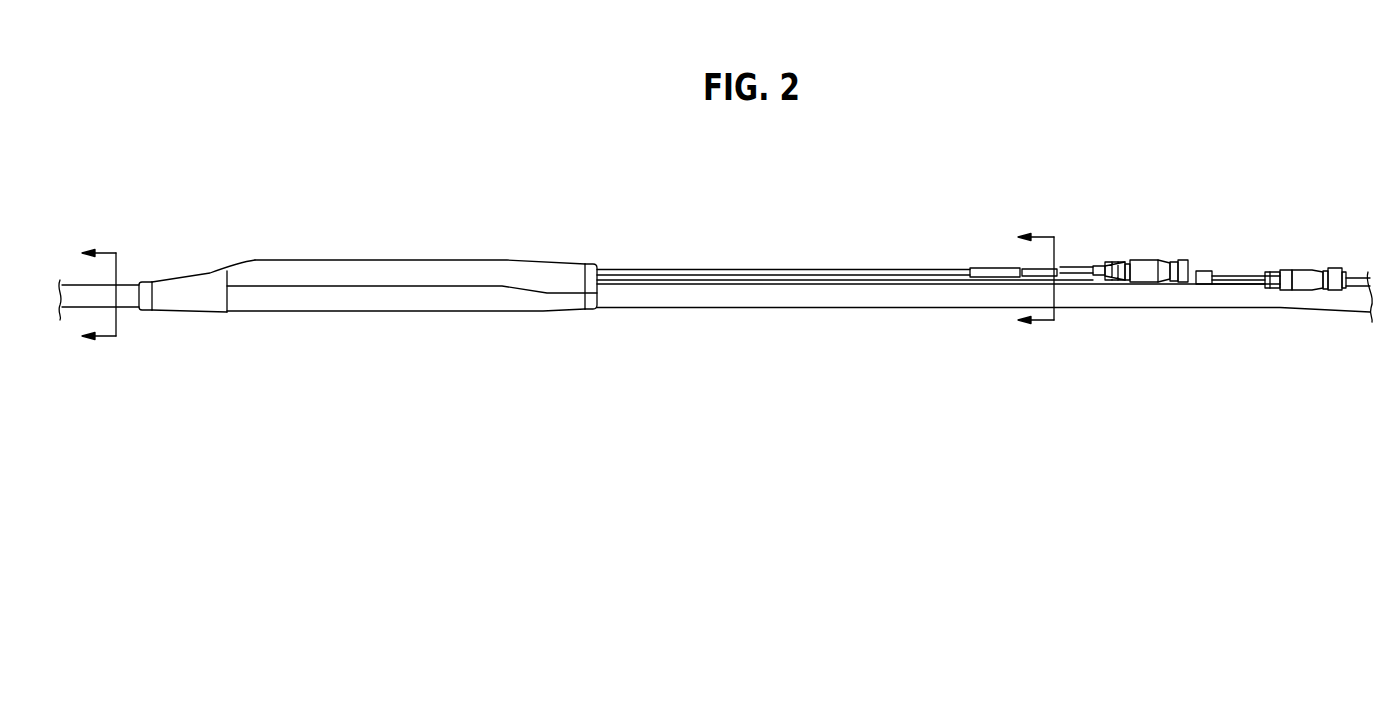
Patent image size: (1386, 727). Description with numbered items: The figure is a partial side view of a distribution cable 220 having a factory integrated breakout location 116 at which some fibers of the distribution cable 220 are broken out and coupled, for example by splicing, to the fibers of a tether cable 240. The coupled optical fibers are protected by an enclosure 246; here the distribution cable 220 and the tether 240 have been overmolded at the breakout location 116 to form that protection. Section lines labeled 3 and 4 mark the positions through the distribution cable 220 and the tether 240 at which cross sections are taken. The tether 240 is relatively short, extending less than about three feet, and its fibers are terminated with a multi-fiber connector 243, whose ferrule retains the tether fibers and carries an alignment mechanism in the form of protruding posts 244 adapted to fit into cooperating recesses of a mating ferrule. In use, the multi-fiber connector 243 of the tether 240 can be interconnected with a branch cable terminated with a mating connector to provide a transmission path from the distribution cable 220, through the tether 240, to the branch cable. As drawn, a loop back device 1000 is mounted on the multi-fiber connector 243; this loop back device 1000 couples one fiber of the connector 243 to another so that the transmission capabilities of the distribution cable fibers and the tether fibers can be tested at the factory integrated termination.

The section line 3- 3 is at (89, 296).
The section line 4- 4 is at (1027, 281).
The breakout location 116 is at (462, 326).
The distribution cable 220 is at (277, 209).
The tether cable 240 is at (822, 272).
The multi-fiber connector 243 is at (1180, 262).
The protruding posts 244 is at (927, 283).
The enclosure 246 is at (452, 245).
The loop back device 1000 is at (1203, 270).